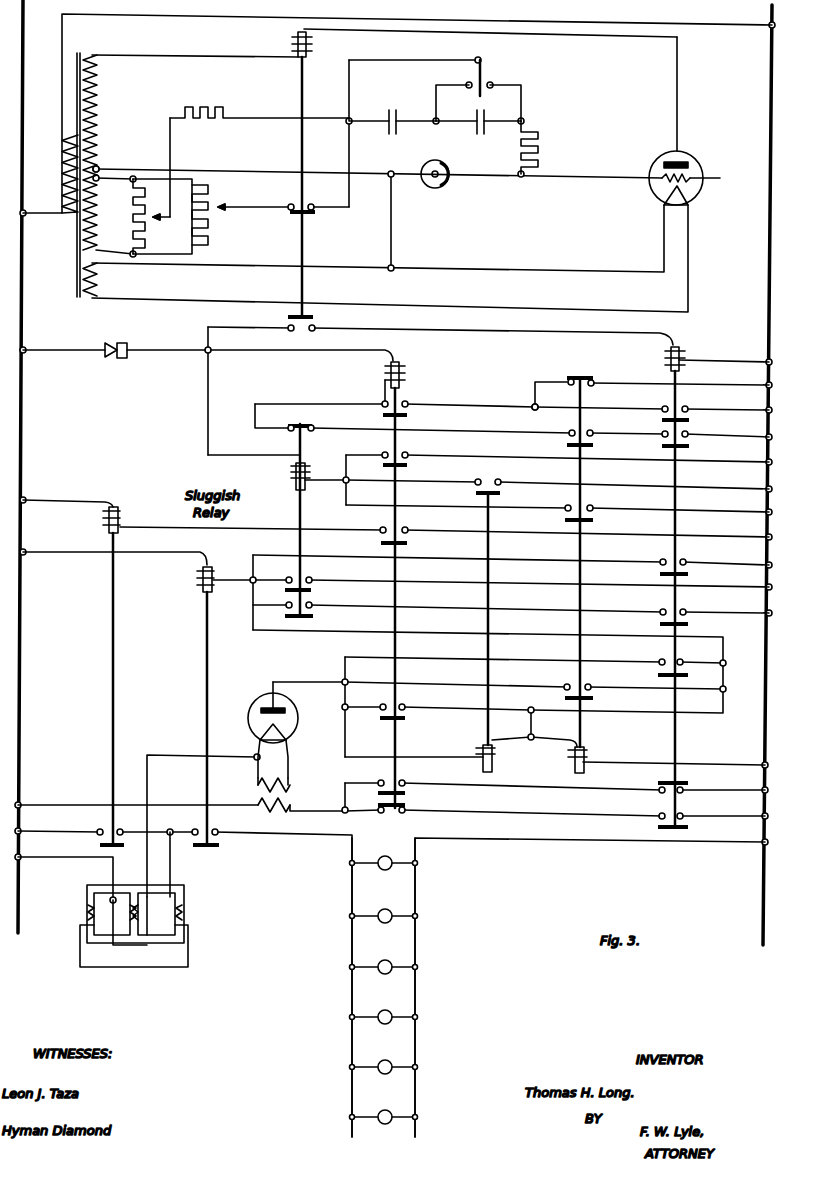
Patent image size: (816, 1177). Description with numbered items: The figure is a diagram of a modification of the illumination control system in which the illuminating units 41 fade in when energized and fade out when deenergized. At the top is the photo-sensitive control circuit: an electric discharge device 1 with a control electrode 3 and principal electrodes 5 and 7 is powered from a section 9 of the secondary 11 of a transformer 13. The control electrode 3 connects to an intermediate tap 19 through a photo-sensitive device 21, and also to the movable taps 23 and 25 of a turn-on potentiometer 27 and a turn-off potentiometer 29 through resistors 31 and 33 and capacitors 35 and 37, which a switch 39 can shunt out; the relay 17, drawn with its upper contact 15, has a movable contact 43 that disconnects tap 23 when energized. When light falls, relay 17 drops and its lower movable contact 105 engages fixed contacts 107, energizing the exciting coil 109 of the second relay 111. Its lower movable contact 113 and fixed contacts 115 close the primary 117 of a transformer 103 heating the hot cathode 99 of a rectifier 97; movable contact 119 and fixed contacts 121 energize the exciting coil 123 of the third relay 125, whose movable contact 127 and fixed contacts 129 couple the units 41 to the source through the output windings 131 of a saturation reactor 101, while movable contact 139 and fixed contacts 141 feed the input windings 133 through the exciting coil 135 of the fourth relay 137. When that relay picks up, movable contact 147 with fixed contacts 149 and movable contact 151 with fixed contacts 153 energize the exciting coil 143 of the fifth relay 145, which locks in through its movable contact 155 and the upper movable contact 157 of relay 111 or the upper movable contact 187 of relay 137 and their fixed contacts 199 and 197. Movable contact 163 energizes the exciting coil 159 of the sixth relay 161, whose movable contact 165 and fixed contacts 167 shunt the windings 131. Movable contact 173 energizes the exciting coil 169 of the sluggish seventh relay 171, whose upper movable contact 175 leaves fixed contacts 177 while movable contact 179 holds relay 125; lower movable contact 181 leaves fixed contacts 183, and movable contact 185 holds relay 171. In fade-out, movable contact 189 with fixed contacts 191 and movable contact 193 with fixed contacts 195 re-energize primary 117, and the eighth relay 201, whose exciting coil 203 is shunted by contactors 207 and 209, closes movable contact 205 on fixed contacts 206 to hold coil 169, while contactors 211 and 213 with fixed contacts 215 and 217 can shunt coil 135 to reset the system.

The electric discharge device 1 is at (696, 162).
The control electrode 3 is at (703, 178).
The anode 5 is at (664, 163).
The principal electrode 7 is at (666, 198).
The section of the secondary 9 is at (97, 122).
The secondary 11 is at (98, 175).
The transformer 13 is at (54, 174).
The relay contact 15 is at (308, 52).
The relay 17 is at (282, 172).
The intermediate tap 19 is at (99, 166).
The photo-sensitive device 21 is at (447, 165).
The movable tap 23 is at (215, 212).
The movable tap 25 is at (150, 220).
The turn-on potentiometer 27 is at (208, 191).
The turn-off potentiometer 29 is at (134, 222).
The resistor 31 is at (539, 142).
The resistor 33 is at (205, 107).
The capacitor 35 is at (484, 112).
The capacitor 37 is at (396, 112).
The switch 39 is at (483, 66).
The illuminating units 41 is at (384, 987).
The movable contact 43 is at (308, 215).
The rectifier 97 is at (285, 710).
The hot cathode 99 is at (284, 735).
The saturation reactor 101 is at (150, 899).
The transformer 103 is at (290, 788).
The lower movable contact 105 is at (314, 318).
The fixed contacts 107 is at (310, 331).
The exciting coil 109 is at (680, 350).
The second relay 111 is at (656, 587).
The lower movable contact 113 is at (688, 827).
The fixed contacts 115 is at (682, 813).
The primary 117 is at (270, 812).
The movable contact 119 is at (688, 574).
The fixed contacts 121 is at (685, 559).
The exciting coil 123 is at (200, 577).
The third relay 125 is at (217, 691).
The movable contact 127 is at (219, 846).
The fixed contacts 129 is at (214, 829).
The output windings 131 is at (88, 912).
The input windings 133 is at (140, 912).
The exciting coil 135 is at (575, 755).
The fourth relay 137 is at (602, 723).
The movable contact 139 is at (688, 675).
The fixed contacts 141 is at (682, 659).
The exciting coil 143 is at (400, 366).
The fifth relay 145 is at (370, 587).
The movable contact 147 is at (567, 445).
The fixed contacts 149 is at (570, 431).
The movable contact 151 is at (689, 446).
The fixed contacts 153 is at (687, 431).
The movable contact 155 is at (407, 415).
The upper movable contact 157 is at (662, 420).
The exciting coil 159 is at (118, 505).
The sixth relay 161 is at (92, 683).
The movable contact 163 is at (407, 543).
The movable contact 165 is at (100, 845).
The fixed contacts 167 is at (102, 829).
The exciting coil 169 is at (306, 465).
The seventh relay 171 is at (277, 520).
The movable contact 173 is at (593, 520).
The upper movable contact 175 is at (305, 423).
The fixed contacts 177 is at (290, 431).
The movable contact 179 is at (285, 590).
The lower movable contact 181 is at (405, 805).
The fixed contacts 183 is at (392, 813).
The movable contact 185 is at (407, 465).
The upper movable contact 187 is at (582, 376).
The movable contact 189 is at (378, 793).
The fixed contacts 191 is at (378, 780).
The movable contact 193 is at (688, 783).
The fixed contacts 195 is at (660, 793).
The fixed contacts 197 is at (566, 384).
The fixed contacts 199 is at (663, 406).
The eighth relay 201 is at (505, 638).
The exciting coil 203 is at (482, 752).
The movable contact 205 is at (500, 493).
The fixed contacts 206 is at (499, 479).
The contactor 207 is at (405, 718).
The contactor 209 is at (593, 698).
The contactor 211 is at (688, 624).
The contactor 213 is at (313, 616).
The fixed contacts 215 is at (685, 609).
The fixed contacts 217 is at (311, 603).